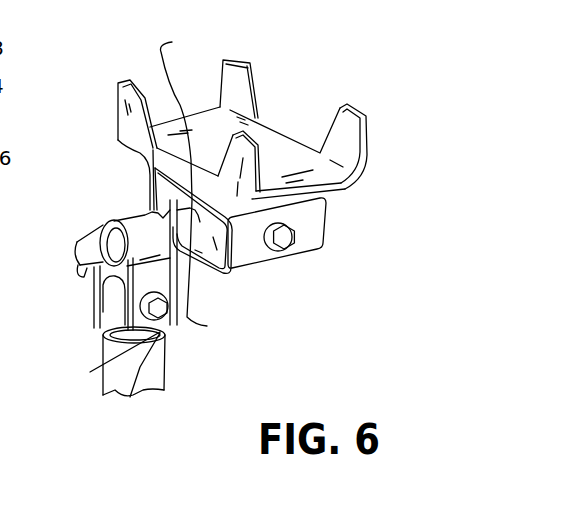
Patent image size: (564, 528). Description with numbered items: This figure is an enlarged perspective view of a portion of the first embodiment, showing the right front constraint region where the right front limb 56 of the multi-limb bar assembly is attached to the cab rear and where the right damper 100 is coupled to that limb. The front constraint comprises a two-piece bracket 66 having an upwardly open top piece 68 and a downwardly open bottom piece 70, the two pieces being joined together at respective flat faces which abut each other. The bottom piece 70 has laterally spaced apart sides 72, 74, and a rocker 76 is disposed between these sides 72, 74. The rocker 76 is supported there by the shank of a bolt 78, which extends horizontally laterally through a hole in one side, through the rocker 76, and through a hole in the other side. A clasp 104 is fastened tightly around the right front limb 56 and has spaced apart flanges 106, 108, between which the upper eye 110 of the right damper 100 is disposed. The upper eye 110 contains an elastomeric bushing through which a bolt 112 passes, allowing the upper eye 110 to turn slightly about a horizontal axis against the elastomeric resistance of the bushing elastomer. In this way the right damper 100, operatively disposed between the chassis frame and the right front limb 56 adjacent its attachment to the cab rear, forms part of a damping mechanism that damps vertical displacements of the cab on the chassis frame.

The right front limb 56 is at (75, 242).
The two-piece bracket 66 is at (367, 110).
The top piece 68 is at (287, 128).
The bottom piece 70 is at (333, 212).
The side 72 is at (128, 195).
The side 74 is at (213, 264).
The rocker 76 is at (173, 249).
The bolt 78 is at (295, 242).
The right damper 100 is at (172, 362).
The clasp 104 is at (122, 218).
The flange 106 is at (97, 308).
The flange 108 is at (90, 372).
The upper eye 110 is at (140, 302).
The bolt 112 is at (137, 393).